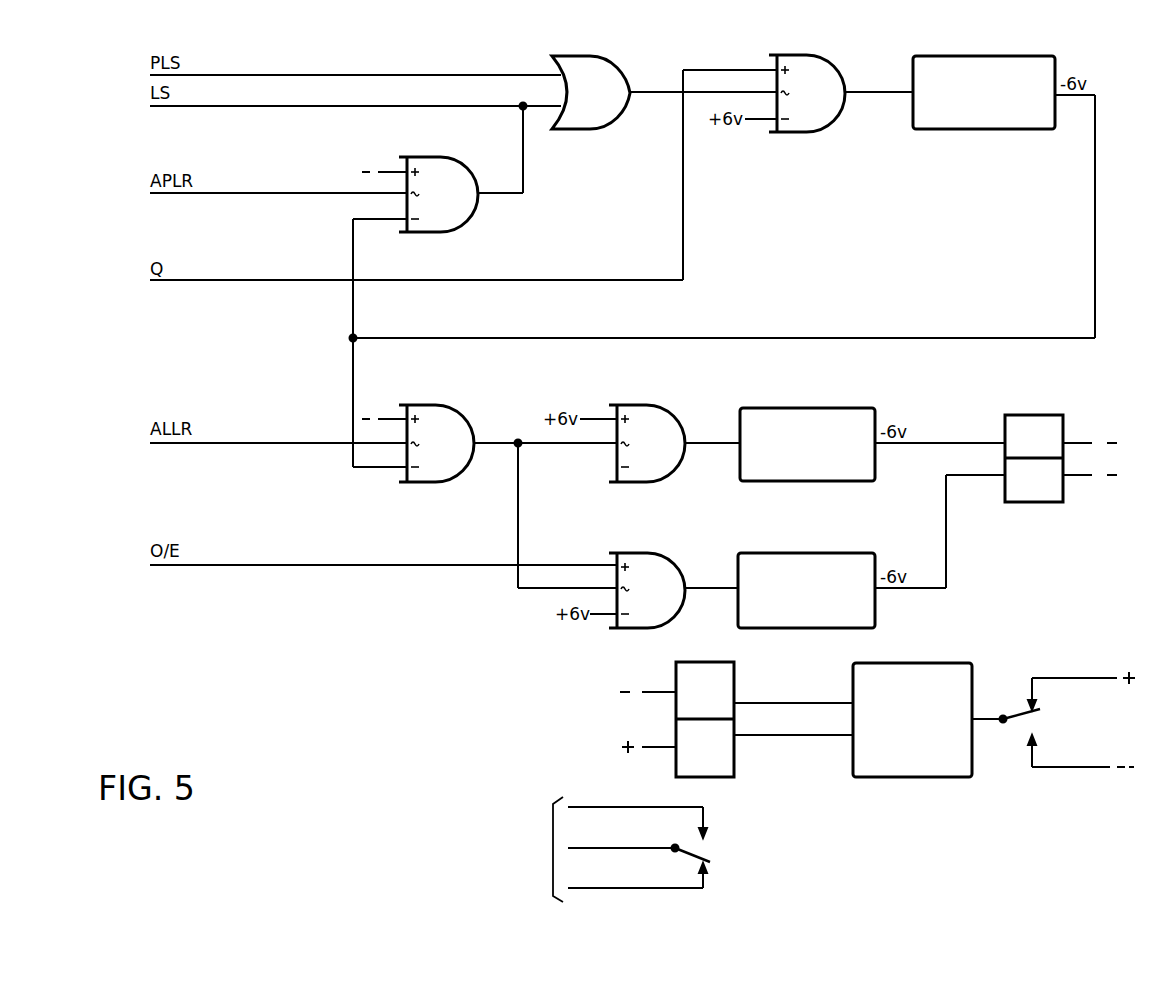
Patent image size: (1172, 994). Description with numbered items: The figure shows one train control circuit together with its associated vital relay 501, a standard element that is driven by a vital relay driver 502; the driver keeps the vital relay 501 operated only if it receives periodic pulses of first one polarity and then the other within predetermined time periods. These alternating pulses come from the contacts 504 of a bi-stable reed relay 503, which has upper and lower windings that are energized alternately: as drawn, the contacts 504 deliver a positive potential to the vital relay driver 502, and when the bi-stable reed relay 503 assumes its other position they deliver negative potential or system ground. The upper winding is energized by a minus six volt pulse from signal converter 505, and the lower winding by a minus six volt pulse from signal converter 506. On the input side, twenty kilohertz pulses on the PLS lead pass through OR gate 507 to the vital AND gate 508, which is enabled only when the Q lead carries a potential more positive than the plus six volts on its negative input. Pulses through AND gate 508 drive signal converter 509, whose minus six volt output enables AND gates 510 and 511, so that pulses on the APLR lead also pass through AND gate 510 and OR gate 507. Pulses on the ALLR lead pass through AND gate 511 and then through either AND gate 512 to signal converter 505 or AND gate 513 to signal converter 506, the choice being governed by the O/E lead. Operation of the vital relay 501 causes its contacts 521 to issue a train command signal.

The vital relay 501 is at (740, 711).
The vital relay driver 502 is at (950, 663).
The bi-stable reed relay 503 is at (1064, 432).
The contacts 504 is at (1033, 723).
The signal converter 505 is at (815, 408).
The signal converter 506 is at (822, 553).
The OR gate 507 is at (595, 63).
The vital AND gate 508 is at (825, 58).
The signal converter 509 is at (1005, 55).
The AND gate 510 is at (447, 182).
The AND gate 511 is at (450, 407).
The AND gate 512 is at (658, 405).
The AND gate 513 is at (672, 563).
The contacts 521 is at (599, 849).